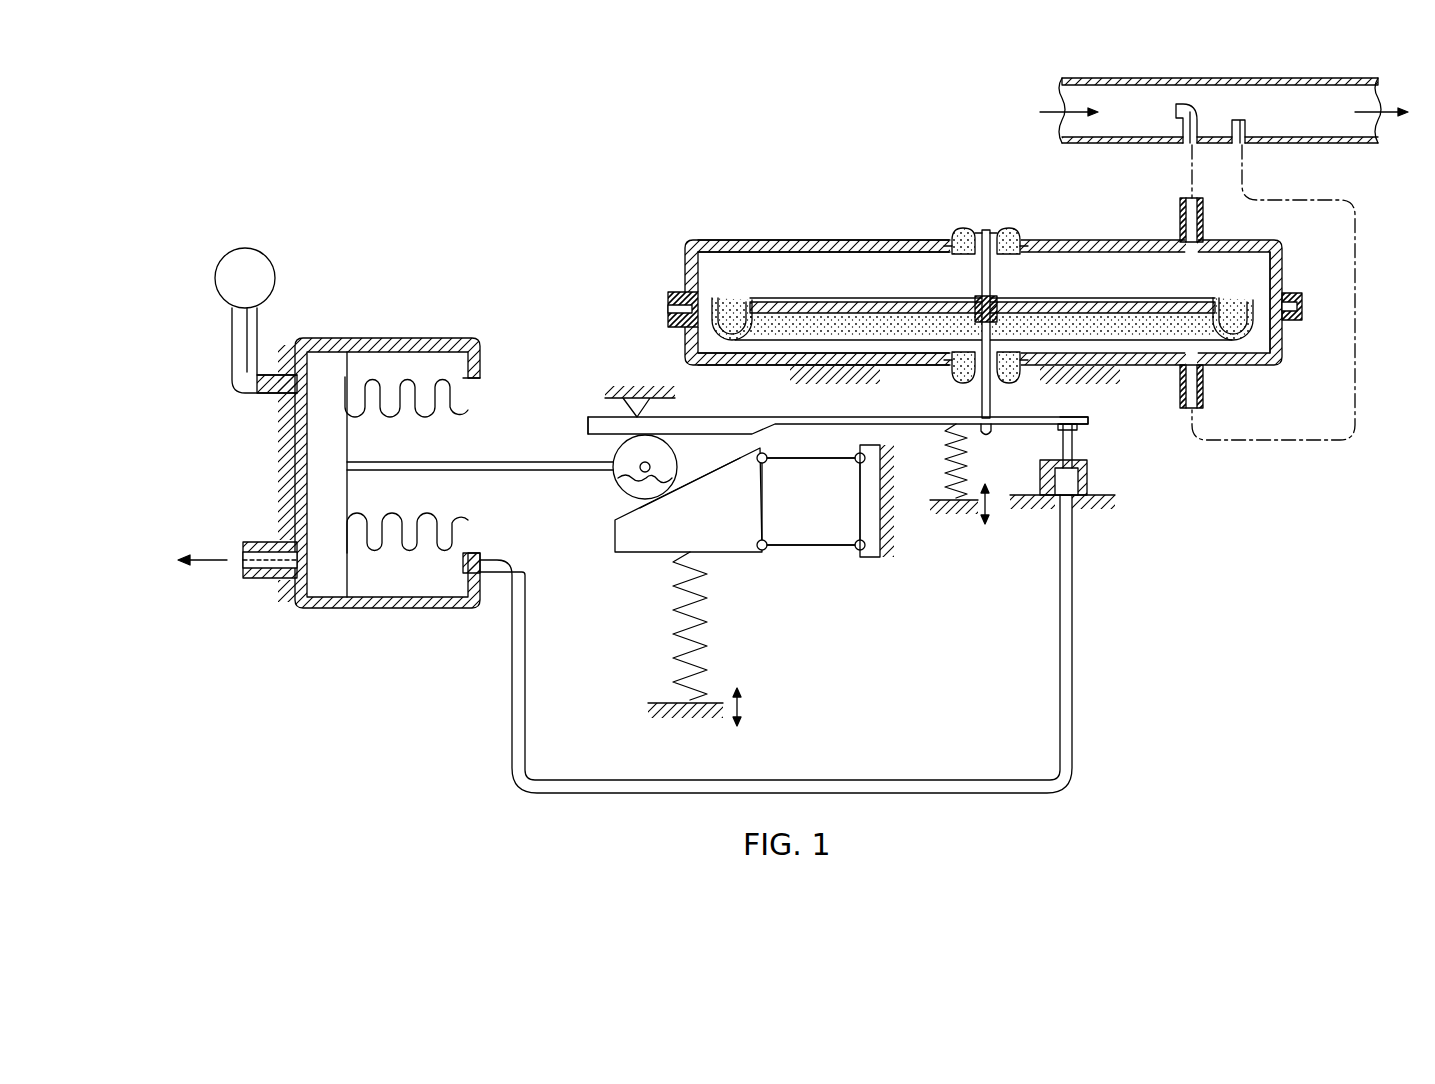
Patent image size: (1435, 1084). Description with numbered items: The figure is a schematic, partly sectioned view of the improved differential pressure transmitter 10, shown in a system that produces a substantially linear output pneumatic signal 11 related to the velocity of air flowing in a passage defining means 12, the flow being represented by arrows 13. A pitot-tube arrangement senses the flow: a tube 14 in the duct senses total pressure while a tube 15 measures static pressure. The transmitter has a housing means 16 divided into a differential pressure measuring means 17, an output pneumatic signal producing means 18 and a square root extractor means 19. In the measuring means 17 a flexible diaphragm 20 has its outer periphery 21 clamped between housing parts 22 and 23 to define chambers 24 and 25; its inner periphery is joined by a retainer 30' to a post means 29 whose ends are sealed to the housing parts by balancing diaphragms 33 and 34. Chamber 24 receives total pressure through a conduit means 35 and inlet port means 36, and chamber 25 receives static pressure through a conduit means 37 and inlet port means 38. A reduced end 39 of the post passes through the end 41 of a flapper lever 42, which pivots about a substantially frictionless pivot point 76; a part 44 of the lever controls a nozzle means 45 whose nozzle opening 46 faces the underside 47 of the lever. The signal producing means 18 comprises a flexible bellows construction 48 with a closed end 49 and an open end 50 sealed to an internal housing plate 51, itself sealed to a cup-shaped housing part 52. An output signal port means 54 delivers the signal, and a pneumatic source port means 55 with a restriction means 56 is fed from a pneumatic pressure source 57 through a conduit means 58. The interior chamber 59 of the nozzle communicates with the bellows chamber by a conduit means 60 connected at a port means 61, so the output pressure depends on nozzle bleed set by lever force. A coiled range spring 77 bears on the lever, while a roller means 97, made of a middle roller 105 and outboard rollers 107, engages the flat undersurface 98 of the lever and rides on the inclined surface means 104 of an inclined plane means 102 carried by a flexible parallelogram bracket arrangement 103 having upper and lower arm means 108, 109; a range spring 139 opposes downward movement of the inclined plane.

The differential pressure transmitter 10 is at (704, 182).
The output pneumatic signal 11 is at (205, 558).
The passage defining means 12 is at (1112, 148).
The air flow arrows 13 is at (1058, 108).
The total pressure tube 14 is at (1195, 118).
The static pressure tube 15 is at (1248, 128).
The housing means 16 is at (1012, 299).
The differential pressure measuring means 17 is at (1012, 292).
The output pneumatic signal producing means 18 is at (386, 447).
The square root extractor means 19 is at (742, 574).
The flexible diaphragm 20 is at (1232, 305).
The outer periphery 21 is at (1302, 305).
The housing part 22 is at (1282, 262).
The housing part 23 is at (1283, 345).
The chamber 24 is at (1048, 250).
The chamber 25 is at (1125, 356).
The post means 29 is at (975, 300).
The retainer 30' is at (983, 304).
The balancing diaphragm 33 is at (960, 228).
The balancing diaphragm 34 is at (960, 383).
The conduit means 35 is at (1190, 178).
The inlet port means 36 is at (1180, 222).
The conduit means 37 is at (1355, 405).
The inlet port means 38 is at (1205, 390).
The reduced end 39 is at (988, 433).
The lever end 41 is at (1078, 417).
The flapper lever 42 is at (812, 403).
The lever part 44 is at (962, 324).
The nozzle means 45 is at (1100, 439).
The nozzle opening 46 is at (1078, 428).
The underside 47 is at (1055, 478).
The flexible bellows construction 48 is at (418, 558).
The closed end 49 is at (347, 495).
The open end 50 is at (470, 384).
The internal housing plate 51 is at (482, 356).
The cup-shaped housing part 52 is at (335, 610).
The output signal port means 54 is at (262, 580).
The pneumatic source port means 55 is at (285, 425).
The restriction means 56 is at (275, 372).
The pneumatic pressure source 57 is at (272, 262).
The conduit means 58 is at (244, 308).
The interior chamber 59 is at (1077, 479).
The conduit means 60 is at (860, 780).
The port means 61 is at (482, 565).
The pivot point 76 is at (620, 406).
The range spring 77 is at (885, 478).
The roller means 97 is at (612, 476).
The flat undersurface 98 is at (592, 426).
The inclined plane means 102 is at (656, 520).
The flexible parallelogram bracket arrangement 103 is at (826, 513).
The inclined surface means 104 is at (728, 458).
The middle roller 105 is at (613, 464).
The outboard rollers 107 is at (620, 506).
The upper arm means 108 is at (780, 458).
The lower arm means 109 is at (815, 550).
The range spring 139 is at (673, 640).